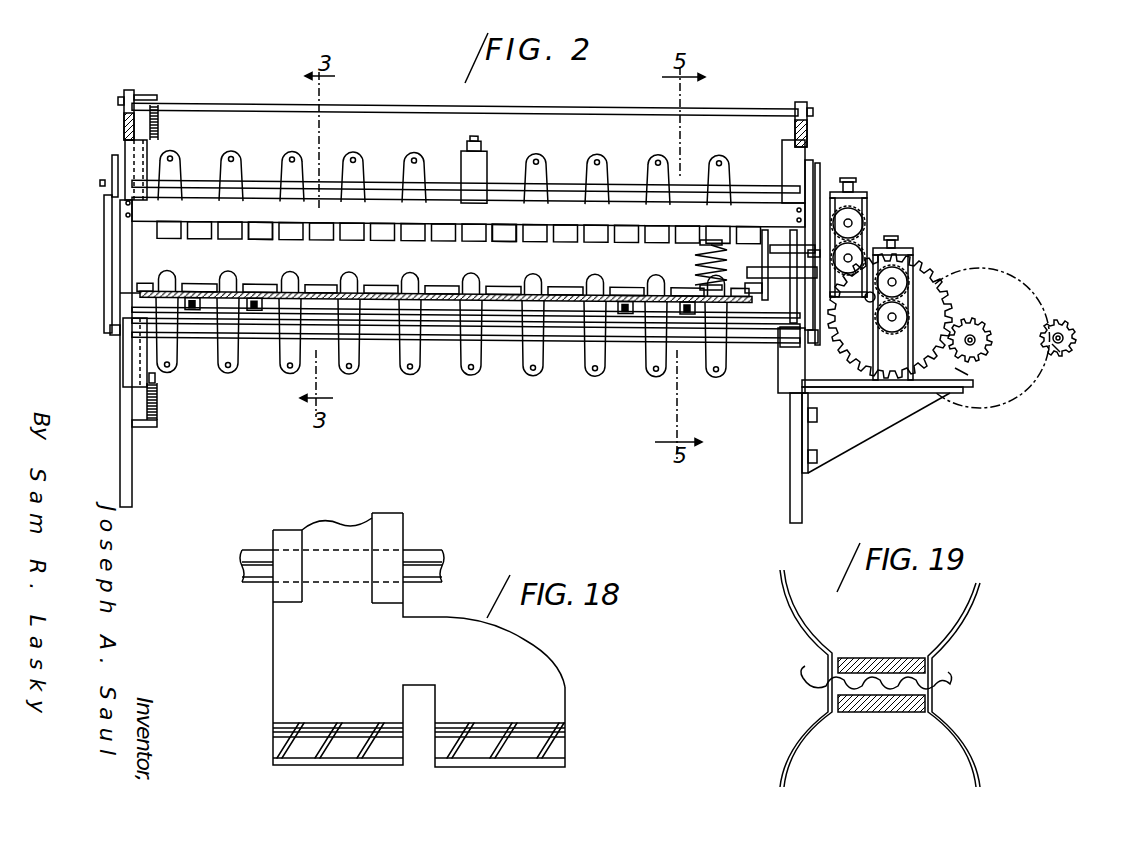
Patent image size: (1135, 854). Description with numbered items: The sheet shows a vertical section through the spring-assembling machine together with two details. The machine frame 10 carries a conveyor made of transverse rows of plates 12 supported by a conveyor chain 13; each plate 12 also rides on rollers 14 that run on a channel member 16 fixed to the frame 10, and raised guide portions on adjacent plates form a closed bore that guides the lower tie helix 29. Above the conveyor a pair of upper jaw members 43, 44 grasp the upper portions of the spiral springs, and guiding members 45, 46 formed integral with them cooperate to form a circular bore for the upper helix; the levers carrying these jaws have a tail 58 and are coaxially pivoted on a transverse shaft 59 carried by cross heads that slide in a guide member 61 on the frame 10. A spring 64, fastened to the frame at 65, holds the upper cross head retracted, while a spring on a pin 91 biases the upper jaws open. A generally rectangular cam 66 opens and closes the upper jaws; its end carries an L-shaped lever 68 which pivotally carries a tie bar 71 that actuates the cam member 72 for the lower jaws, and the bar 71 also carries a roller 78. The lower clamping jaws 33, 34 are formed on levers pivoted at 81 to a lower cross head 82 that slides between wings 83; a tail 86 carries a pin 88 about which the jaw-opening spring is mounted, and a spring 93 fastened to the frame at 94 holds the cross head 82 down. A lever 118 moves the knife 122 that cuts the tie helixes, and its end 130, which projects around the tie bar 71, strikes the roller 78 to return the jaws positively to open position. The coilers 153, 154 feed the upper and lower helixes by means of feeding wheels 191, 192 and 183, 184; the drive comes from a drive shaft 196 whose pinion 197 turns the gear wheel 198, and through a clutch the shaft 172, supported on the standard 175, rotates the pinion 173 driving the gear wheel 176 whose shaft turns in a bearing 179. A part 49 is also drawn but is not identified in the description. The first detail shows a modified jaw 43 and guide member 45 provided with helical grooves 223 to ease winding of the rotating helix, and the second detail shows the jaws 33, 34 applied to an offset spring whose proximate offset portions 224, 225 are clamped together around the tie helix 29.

In FIG. 2, the frame 10 is at (118, 410).
In FIG. 2, the plates 12 is at (205, 290).
In FIG. 2, the conveyor chain 13 is at (260, 287).
In FIG. 2, the rollers 14 is at (695, 367).
In FIG. 2, the channel member 16 is at (133, 295).
In FIG. 19, the lower helix 29 is at (817, 690).
In FIG. 19, the clamping jaw 33 is at (883, 658).
In FIG. 19, the clamping jaw 34 is at (888, 703).
In FIG. 18, the upper jaw member 43 is at (285, 637).
In FIG. 2, the upper jaw member 44 is at (163, 227).
In FIG. 18, the guiding member 45 is at (550, 700).
In FIG. 2, the guiding member 46 is at (258, 228).
In FIG. 2, the plate 49 is at (473, 281).
In FIG. 2, the tail portion 58 is at (176, 171).
In FIG. 18, the transversely extending shaft 59 is at (250, 553).
In FIG. 2, the guide member 61 is at (147, 135).
In FIG. 2, the spring 64 is at (160, 112).
In FIG. 2, the fastening point 65 is at (143, 95).
In FIG. 2, the opening and closing cam 66 is at (435, 190).
In FIG. 2, the L-shaped lever 68 is at (114, 168).
In FIG. 2, the tie bar 71 is at (104, 250).
In FIG. 2, the cam member 72 is at (200, 333).
In FIG. 2, the roller 78 is at (808, 250).
In FIG. 2, the pivot 81 is at (567, 317).
In FIG. 2, the cross head 82 is at (133, 302).
In FIG. 2, the wing 83 is at (123, 355).
In FIG. 2, the tail portion 86 is at (278, 357).
In FIG. 2, the pin 88 is at (352, 377).
In FIG. 2, the pin 91 is at (291, 160).
In FIG. 2, the spring 93 is at (157, 405).
In FIG. 2, the fastening point 94 is at (143, 427).
In FIG. 2, the lever 118 is at (712, 270).
In FIG. 2, the knife 122 is at (757, 302).
In FIG. 2, the end of lever 130 is at (780, 272).
In FIG. 2, the coiler 153 is at (848, 210).
In FIG. 2, the coiler 154 is at (865, 300).
In FIG. 2, the shaft 172 is at (967, 337).
In FIG. 2, the pinion 173 is at (977, 350).
In FIG. 2, the standard 175 is at (962, 370).
In FIG. 2, the gear wheel 176 is at (953, 287).
In FIG. 2, the bearing 179 is at (897, 370).
In FIG. 2, the feeding wheel 183 is at (913, 263).
In FIG. 2, the feeding wheel 184 is at (872, 330).
In FIG. 2, the feeding wheel 191 is at (860, 242).
In FIG. 2, the feeding wheel 192 is at (860, 203).
In FIG. 2, the drive shaft 196 is at (1057, 350).
In FIG. 2, the driving pinion 197 is at (1073, 338).
In FIG. 2, the gear wheel 198 is at (1025, 312).
In FIG. 18, the helical grooves 223 is at (372, 730).
In FIG. 19, the offset portion 224 is at (933, 670).
In FIG. 19, the offset portion 225 is at (937, 698).